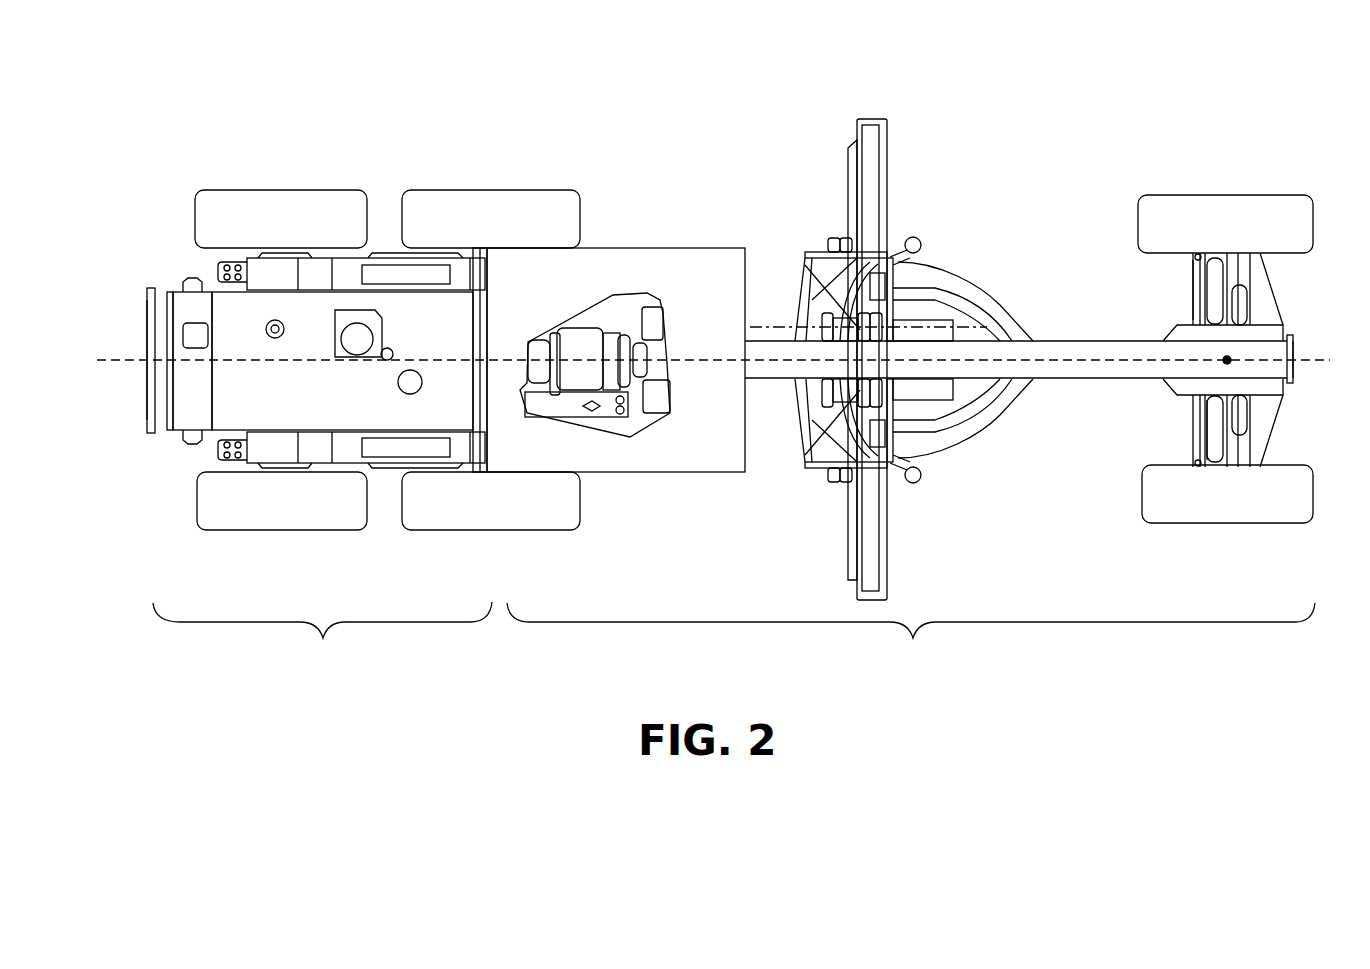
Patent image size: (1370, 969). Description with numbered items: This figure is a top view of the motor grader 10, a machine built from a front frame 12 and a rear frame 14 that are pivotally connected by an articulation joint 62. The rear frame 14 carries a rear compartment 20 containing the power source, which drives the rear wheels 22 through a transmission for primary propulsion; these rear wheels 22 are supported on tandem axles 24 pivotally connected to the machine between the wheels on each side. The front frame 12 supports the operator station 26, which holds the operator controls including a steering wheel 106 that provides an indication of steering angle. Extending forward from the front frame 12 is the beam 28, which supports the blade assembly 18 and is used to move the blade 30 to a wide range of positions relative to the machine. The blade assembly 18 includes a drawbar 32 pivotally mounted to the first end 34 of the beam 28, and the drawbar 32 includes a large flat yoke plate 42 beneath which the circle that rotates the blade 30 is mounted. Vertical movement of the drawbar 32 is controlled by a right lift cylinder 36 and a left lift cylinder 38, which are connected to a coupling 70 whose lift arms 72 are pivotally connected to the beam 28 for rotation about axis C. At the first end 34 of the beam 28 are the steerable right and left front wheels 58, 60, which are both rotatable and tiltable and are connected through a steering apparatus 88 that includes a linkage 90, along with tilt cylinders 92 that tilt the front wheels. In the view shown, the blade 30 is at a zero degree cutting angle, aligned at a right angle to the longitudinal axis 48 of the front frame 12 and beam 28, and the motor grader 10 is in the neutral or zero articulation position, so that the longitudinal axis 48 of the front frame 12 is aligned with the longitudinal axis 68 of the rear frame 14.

The motor grader 10 is at (775, 61).
The front frame 12 is at (911, 637).
The rear frame 14 is at (322, 637).
The blade assembly 18 is at (1007, 196).
The rear compartment 20 is at (234, 388).
The rear wheels 22 is at (242, 190).
The tandem axles 24 is at (390, 243).
The operator station 26 is at (699, 248).
The beam 28 is at (1106, 380).
The blade 30 is at (887, 130).
The drawbar 32 is at (975, 266).
The first end 34 is at (1256, 348).
The right lift cylinder 36 is at (919, 481).
The left lift cylinder 38 is at (921, 241).
The yoke plate 42 is at (980, 432).
The longitudinal axis 48 is at (1298, 351).
The right wheel 58 is at (1206, 525).
The left wheel 60 is at (1192, 196).
The articulation joint 62 is at (497, 334).
The longitudinal axis 68 is at (135, 358).
The coupling 70 is at (824, 318).
The lift arms 72 is at (828, 237).
The steering apparatus 88 is at (1170, 278).
The linkage 90 is at (1193, 300).
The tilt cylinders 92 is at (1240, 418).
The steering wheel 106 is at (635, 320).
The axis C is at (992, 324).